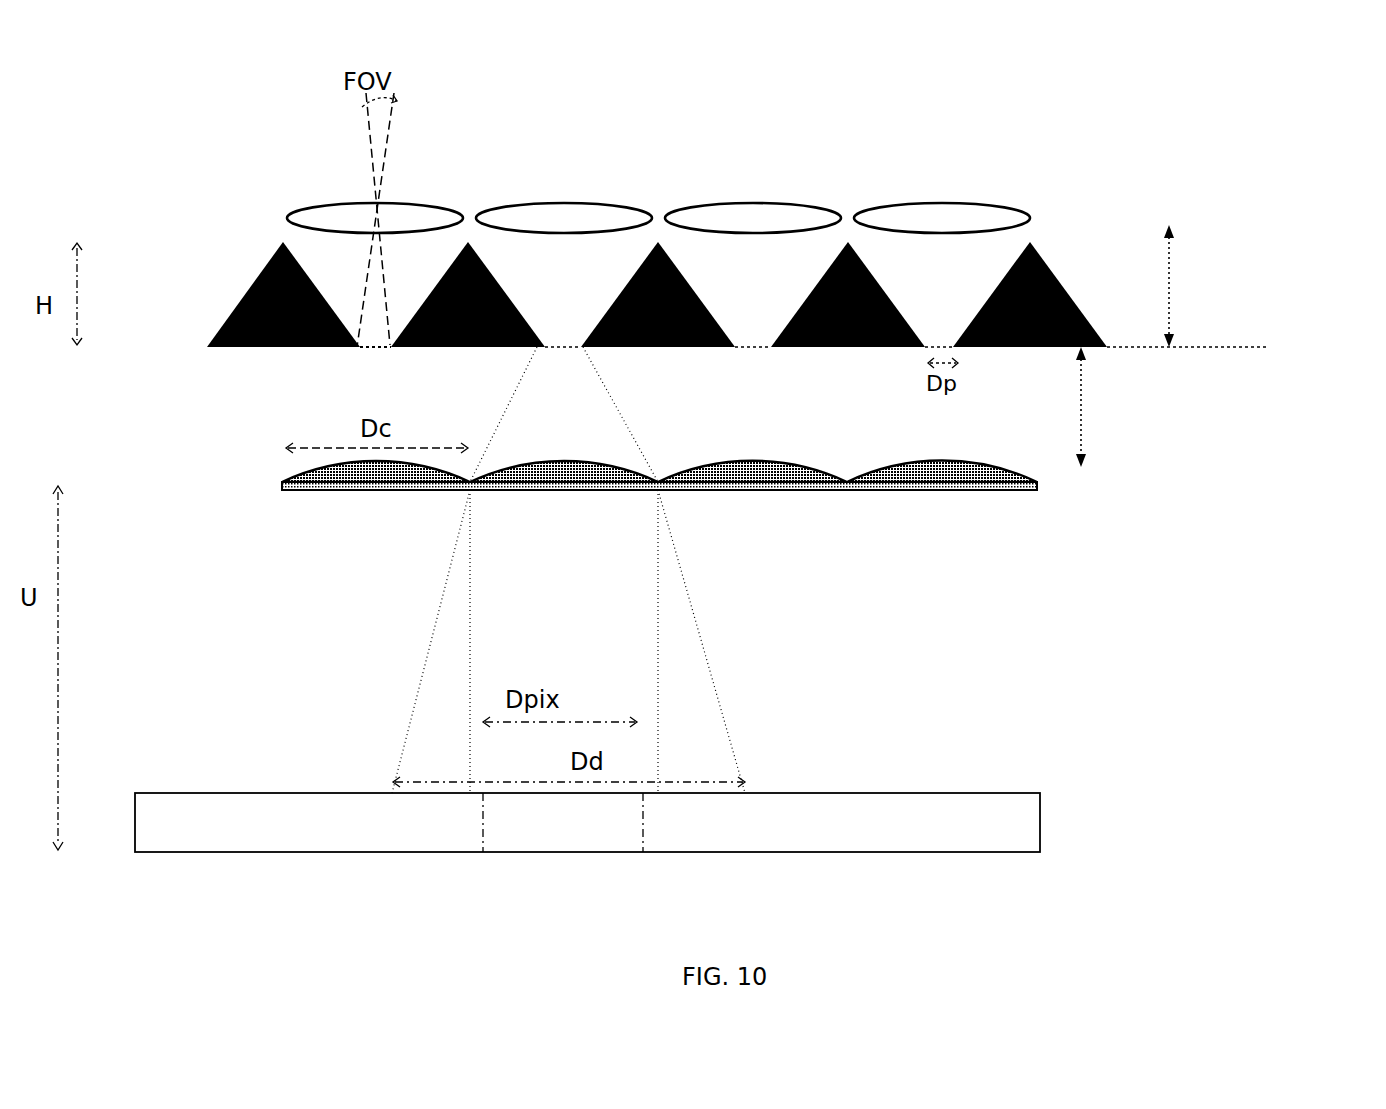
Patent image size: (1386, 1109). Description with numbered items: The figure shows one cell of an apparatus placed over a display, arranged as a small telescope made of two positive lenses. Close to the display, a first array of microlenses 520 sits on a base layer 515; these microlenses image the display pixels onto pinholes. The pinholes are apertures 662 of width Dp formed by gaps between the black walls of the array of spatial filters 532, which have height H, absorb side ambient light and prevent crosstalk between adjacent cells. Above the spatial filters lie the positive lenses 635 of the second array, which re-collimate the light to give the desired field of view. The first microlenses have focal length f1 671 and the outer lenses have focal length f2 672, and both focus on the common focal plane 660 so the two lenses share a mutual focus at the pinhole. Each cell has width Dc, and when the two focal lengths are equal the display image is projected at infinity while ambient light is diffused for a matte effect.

The array of spatial filters 532 is at (208, 273).
The positive lenses 635 is at (727, 203).
The aperture 662 is at (368, 348).
The focal plane 660 is at (938, 352).
The focal length f2 672 is at (1260, 286).
The focal length f1 671 is at (1173, 407).
The first array of microlenses 520 is at (265, 478).
The base layer 515 is at (1036, 501).